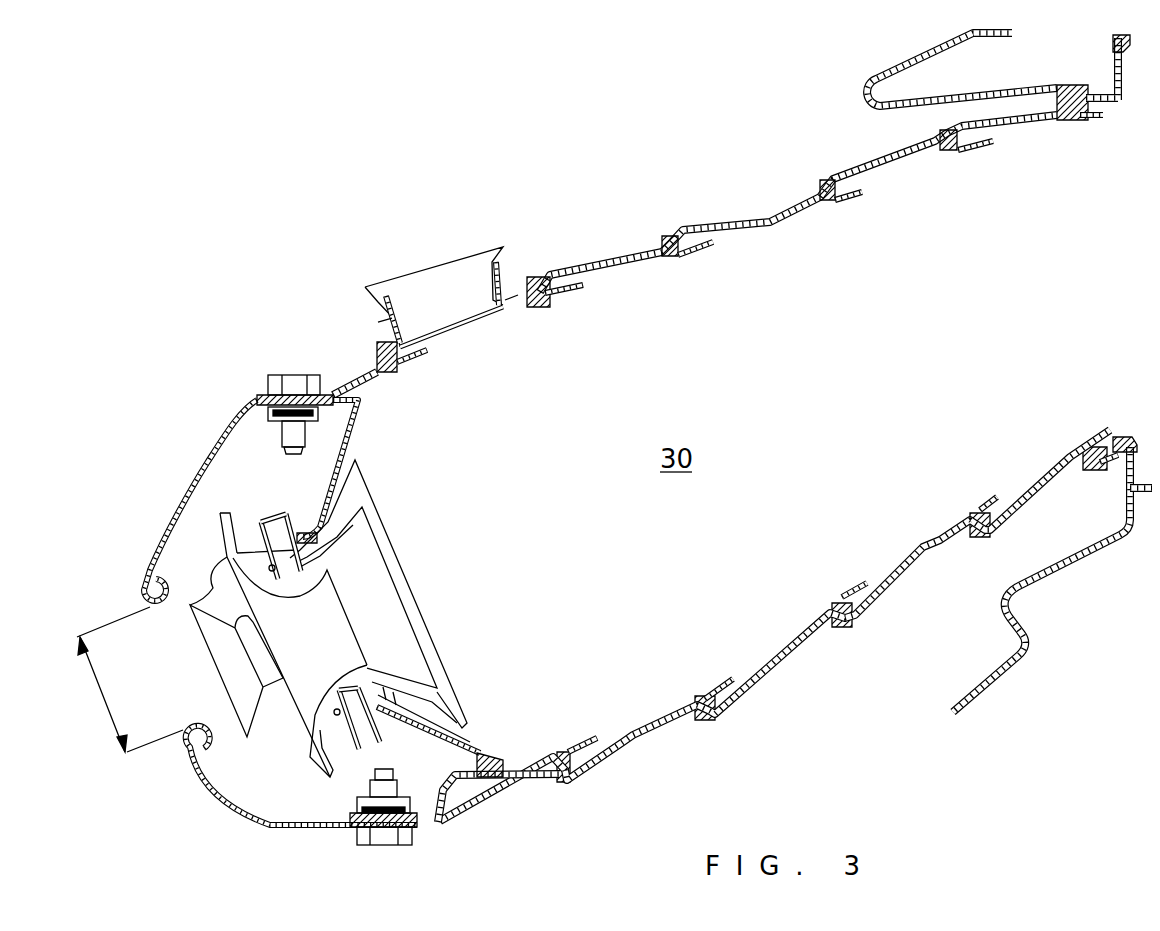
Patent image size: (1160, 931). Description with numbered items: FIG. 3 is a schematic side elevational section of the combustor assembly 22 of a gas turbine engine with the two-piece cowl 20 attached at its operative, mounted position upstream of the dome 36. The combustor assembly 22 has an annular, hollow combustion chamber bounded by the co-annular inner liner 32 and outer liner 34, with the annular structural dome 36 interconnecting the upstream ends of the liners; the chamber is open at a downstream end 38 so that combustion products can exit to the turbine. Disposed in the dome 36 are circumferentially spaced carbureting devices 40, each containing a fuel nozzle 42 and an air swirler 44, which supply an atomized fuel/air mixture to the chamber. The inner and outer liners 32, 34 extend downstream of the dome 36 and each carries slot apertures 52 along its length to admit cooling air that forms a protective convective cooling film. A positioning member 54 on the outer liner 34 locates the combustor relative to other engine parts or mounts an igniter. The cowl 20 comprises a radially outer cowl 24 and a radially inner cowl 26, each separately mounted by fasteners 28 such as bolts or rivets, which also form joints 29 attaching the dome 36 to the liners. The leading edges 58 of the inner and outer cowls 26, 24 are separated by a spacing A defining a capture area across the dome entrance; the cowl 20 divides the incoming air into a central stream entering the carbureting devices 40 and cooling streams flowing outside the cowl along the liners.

The two-piece cowl 20 is at (188, 500).
The combustor assembly 22 is at (318, 222).
The radially outer cowl 24 is at (207, 462).
The radially inner cowl 26 is at (205, 787).
The fasteners 28 is at (291, 375).
The joints 29 is at (265, 355).
The inner liner 32 is at (772, 664).
The outer liner 34 is at (616, 262).
The dome plate 36 is at (345, 438).
The downstream end 38 is at (1102, 314).
The carbureting devices 40 is at (252, 645).
The fuel nozzle 42 is at (215, 628).
The air swirler 44 is at (395, 545).
The slot apertures 52 is at (663, 240).
The positioning member 54 is at (462, 252).
The leading edges 58 is at (145, 598).
The spacing A is at (100, 700).